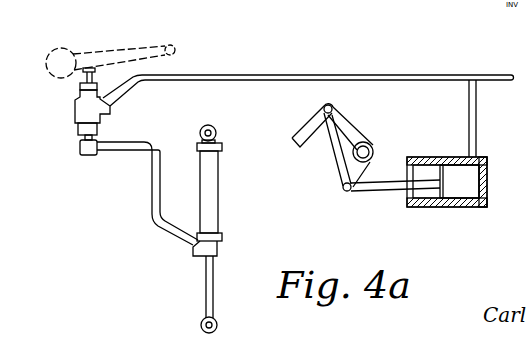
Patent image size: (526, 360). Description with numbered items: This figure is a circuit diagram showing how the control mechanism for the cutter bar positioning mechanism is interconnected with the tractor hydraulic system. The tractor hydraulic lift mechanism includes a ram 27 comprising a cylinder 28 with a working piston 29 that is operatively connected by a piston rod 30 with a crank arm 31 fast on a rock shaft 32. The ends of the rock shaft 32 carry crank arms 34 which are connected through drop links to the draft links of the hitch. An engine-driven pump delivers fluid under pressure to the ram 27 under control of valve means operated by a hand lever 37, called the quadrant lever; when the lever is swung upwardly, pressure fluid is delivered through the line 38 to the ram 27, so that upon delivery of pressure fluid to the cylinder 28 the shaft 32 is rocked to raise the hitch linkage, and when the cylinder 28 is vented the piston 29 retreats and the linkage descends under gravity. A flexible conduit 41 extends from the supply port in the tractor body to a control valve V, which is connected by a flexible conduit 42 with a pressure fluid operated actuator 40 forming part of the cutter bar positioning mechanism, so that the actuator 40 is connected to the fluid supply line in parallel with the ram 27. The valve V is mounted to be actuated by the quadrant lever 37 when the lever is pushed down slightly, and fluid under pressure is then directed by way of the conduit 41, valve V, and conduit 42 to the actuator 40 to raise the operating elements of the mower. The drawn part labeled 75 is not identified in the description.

The hand lever 37 is at (104, 47).
The control valve V is at (75, 120).
The flexible conduit 41 is at (207, 79).
The line 38 is at (495, 74).
The flexible conduit 42 is at (152, 193).
The pressure fluid operated actuator 40 is at (218, 207).
The arm 75 is at (303, 128).
The crank arms 34 is at (350, 129).
The rock shaft 32 is at (375, 145).
The crank arm 31 is at (344, 176).
The piston rod 30 is at (380, 190).
The ram 27 is at (487, 190).
The cylinder 28 is at (446, 157).
The working piston 29 is at (428, 192).